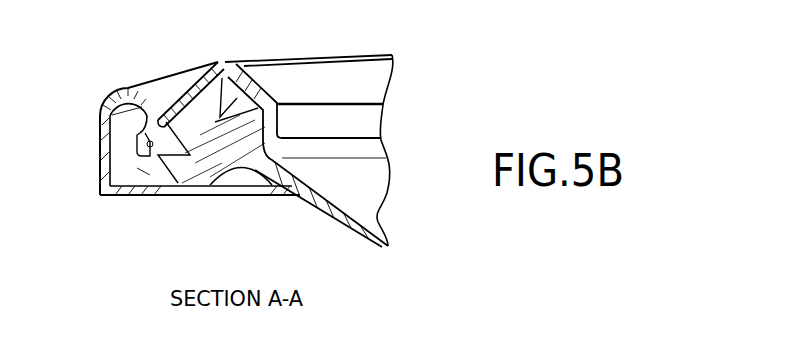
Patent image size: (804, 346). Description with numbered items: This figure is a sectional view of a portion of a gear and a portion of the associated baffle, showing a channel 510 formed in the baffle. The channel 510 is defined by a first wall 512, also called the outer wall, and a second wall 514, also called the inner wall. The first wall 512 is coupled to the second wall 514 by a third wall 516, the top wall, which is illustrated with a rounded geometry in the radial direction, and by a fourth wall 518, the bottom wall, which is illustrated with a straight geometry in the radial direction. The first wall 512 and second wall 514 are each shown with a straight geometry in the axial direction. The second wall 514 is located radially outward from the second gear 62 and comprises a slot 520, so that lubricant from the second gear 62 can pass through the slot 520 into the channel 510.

The channel 510 is at (118, 127).
The first wall 512 is at (100, 160).
The second wall 514 is at (176, 130).
The third wall 516 is at (144, 82).
The fourth wall 518 is at (126, 197).
The slot 520 is at (148, 178).
The second gear 62 is at (252, 190).